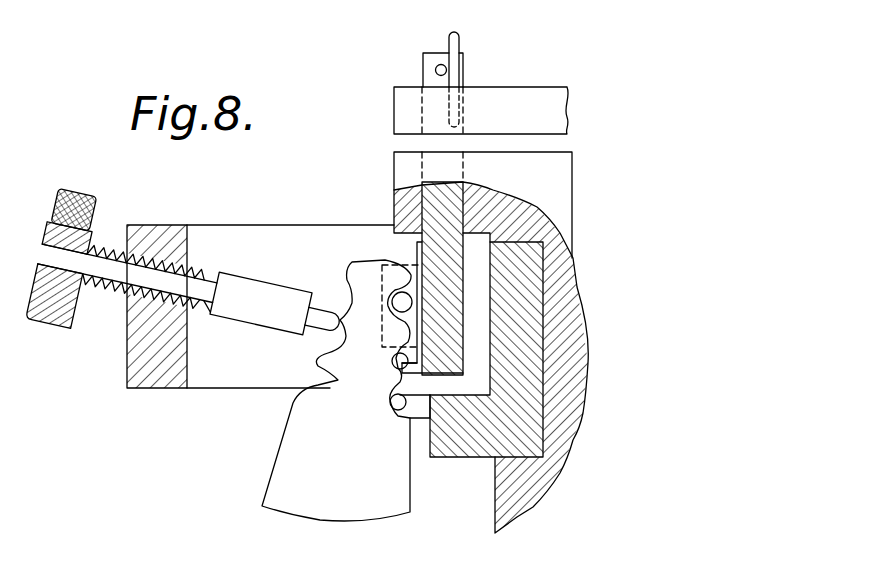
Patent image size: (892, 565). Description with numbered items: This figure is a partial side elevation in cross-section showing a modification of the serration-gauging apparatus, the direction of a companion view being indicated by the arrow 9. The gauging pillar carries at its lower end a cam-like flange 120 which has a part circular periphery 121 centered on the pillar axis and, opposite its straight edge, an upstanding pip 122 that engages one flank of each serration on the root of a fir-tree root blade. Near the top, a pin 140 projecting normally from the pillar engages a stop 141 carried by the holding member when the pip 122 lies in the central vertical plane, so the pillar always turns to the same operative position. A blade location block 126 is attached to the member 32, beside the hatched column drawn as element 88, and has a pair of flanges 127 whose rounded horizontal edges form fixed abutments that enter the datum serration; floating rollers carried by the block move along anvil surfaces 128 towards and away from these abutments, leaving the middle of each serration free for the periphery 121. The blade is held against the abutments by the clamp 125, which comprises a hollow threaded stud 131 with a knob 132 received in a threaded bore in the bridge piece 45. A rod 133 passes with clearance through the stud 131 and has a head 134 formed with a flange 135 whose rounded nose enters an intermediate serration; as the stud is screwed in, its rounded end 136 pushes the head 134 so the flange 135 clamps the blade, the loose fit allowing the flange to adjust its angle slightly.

The arrow 9 is at (318, 190).
The member 32 is at (523, 229).
The bridge piece 45 is at (138, 383).
The column member 88 is at (460, 286).
The cam-like projection or flange 120 is at (406, 414).
The part circular periphery 121 is at (416, 366).
The pip 122 is at (398, 358).
The clamp 125 is at (83, 352).
The blade location block 126 is at (533, 340).
The flanges 127 is at (426, 374).
The anvil surfaces 128 is at (417, 260).
The hollow threaded stud 131 is at (100, 237).
The knob 132 is at (90, 193).
The rod 133 is at (190, 282).
The head 134 is at (243, 285).
The flange 135 is at (327, 306).
The rounded end 136 is at (208, 312).
The pin 140 is at (437, 68).
The stop 141 is at (460, 43).